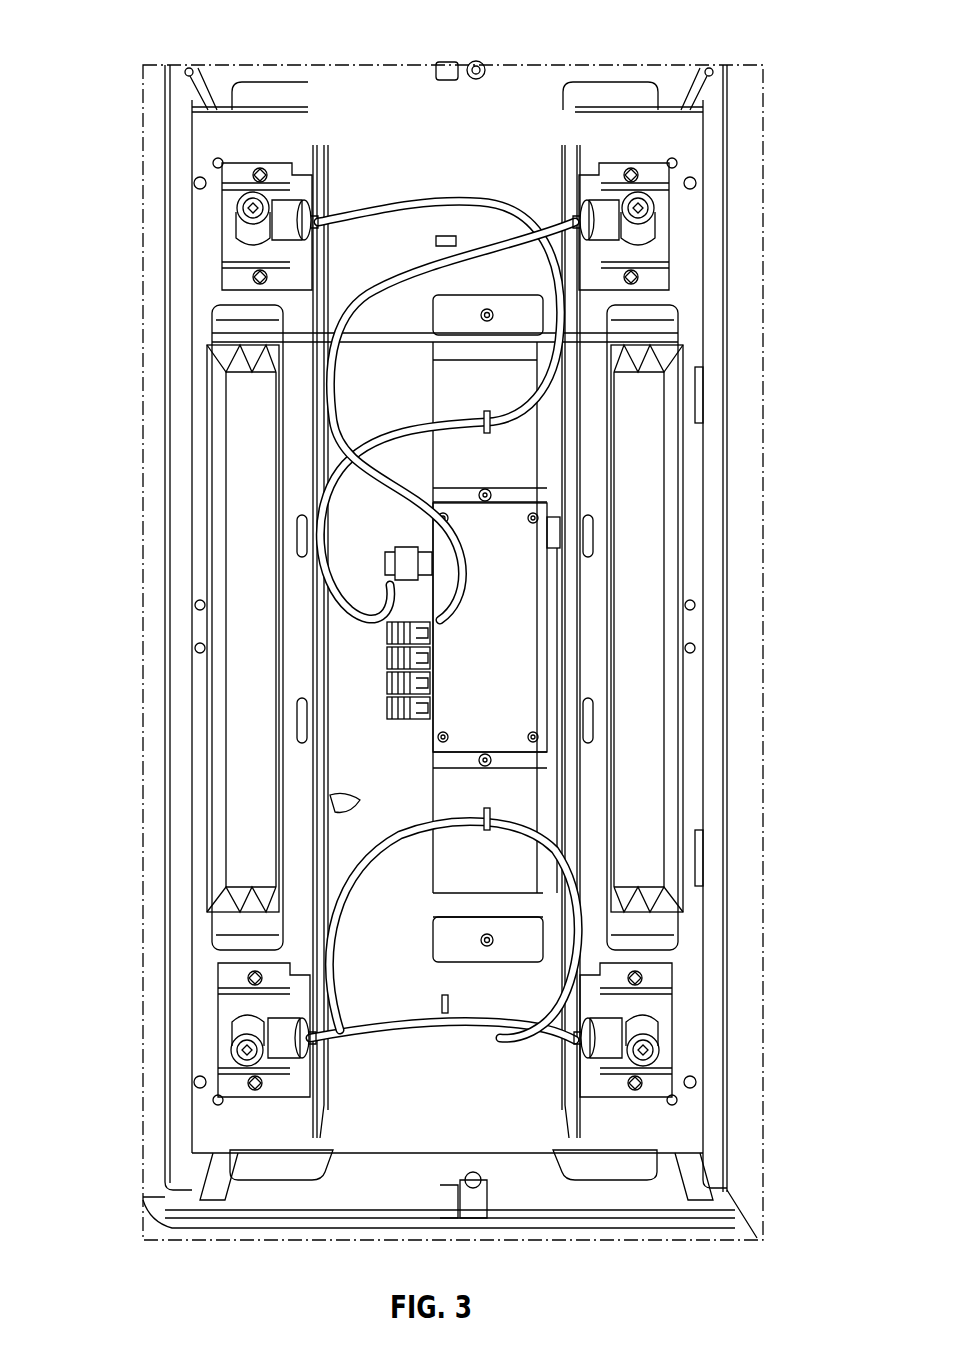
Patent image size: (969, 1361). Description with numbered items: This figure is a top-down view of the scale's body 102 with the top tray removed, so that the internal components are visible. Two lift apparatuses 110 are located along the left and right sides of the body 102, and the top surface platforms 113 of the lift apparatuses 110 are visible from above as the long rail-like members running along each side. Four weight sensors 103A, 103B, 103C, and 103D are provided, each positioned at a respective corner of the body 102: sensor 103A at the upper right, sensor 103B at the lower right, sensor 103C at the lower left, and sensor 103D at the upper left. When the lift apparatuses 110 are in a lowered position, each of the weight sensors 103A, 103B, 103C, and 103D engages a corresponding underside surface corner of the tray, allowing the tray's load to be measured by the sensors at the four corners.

The body 102 is at (804, 32).
The weight sensor 103A is at (678, 227).
The weight sensor 103B is at (680, 1033).
The weight sensor 103C is at (218, 1033).
The weight sensor 103D is at (220, 227).
The lift apparatus 110 is at (258, 385).
The top surface platform 113 is at (465, 148).